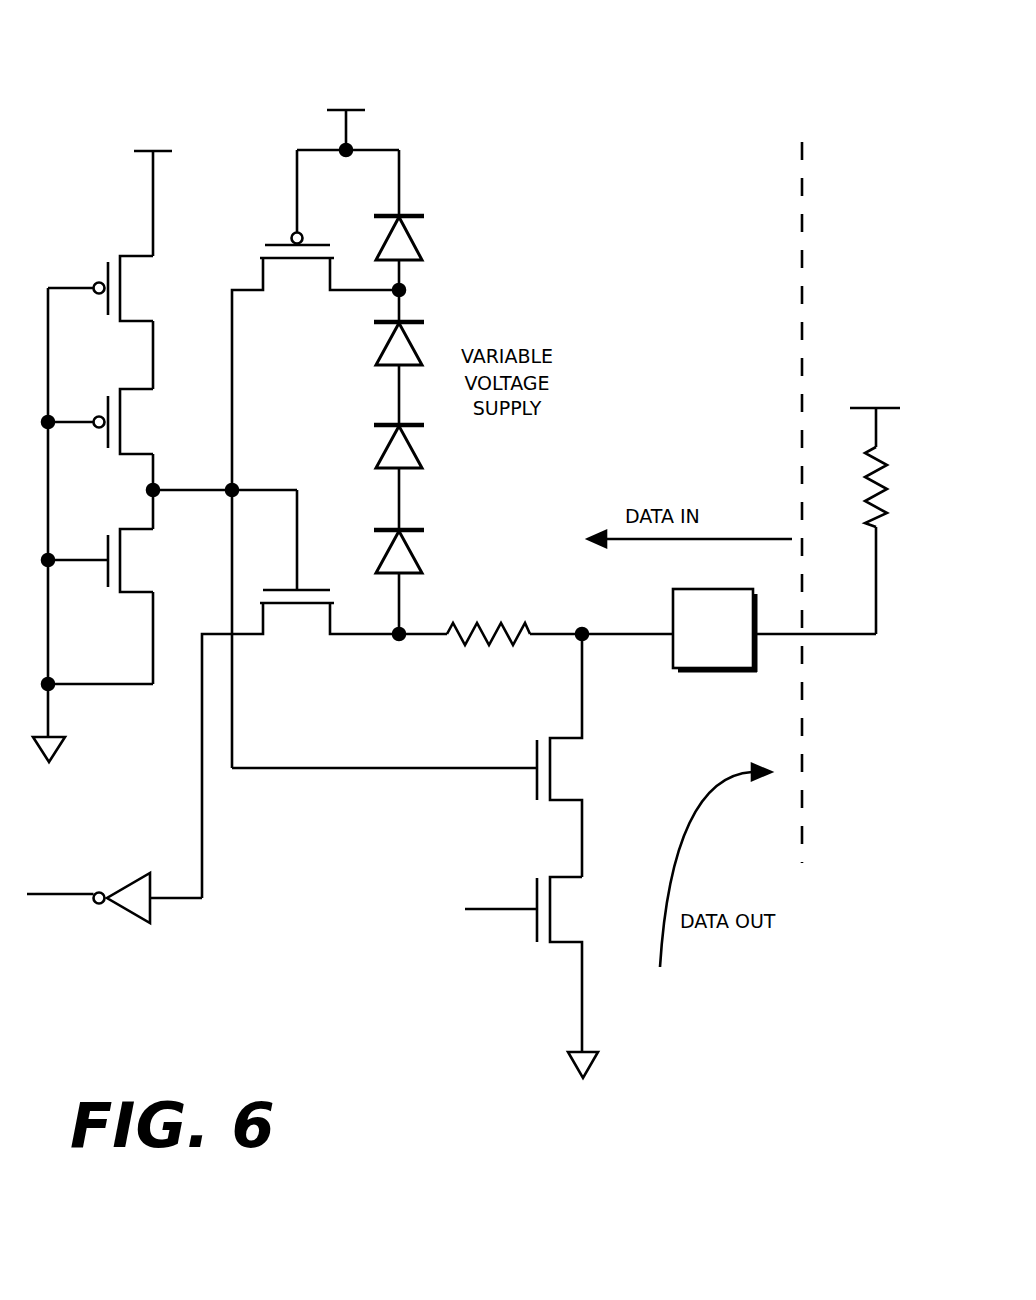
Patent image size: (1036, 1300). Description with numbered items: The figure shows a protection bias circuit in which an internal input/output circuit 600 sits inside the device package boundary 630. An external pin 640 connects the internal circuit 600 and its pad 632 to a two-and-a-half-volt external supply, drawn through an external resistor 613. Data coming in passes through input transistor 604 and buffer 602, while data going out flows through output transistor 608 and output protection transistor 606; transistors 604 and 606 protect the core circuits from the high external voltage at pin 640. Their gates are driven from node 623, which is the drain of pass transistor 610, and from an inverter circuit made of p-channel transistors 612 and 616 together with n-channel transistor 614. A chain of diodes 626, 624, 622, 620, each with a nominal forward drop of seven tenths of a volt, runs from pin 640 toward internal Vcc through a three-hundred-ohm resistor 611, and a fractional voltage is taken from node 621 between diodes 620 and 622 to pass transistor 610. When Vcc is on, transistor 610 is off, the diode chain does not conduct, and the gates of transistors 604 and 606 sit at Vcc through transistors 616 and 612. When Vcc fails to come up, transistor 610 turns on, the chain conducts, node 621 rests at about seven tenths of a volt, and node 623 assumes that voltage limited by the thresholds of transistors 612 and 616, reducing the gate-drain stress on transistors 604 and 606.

The internal input/output circuit 600 is at (107, 30).
The buffer 602 is at (114, 913).
The input transistor 604 is at (324, 744).
The output protection transistor 606 is at (424, 755).
The output transistor 608 is at (517, 977).
The pass transistor 610 is at (315, 424).
The resistor 611 is at (560, 649).
The p-channel pass transistor 612 is at (115, 387).
The external resistor 613 is at (868, 428).
The transistor 614 is at (115, 523).
The p-channel pass transistor 616 is at (118, 288).
The diode 620 is at (419, 236).
The node 621 is at (422, 290).
The diode 622 is at (419, 372).
The node 623 is at (222, 526).
The diode 624 is at (419, 477).
The diode 626 is at (422, 585).
The device package boundary 630 is at (803, 486).
The pad 632 is at (715, 630).
The external pin 640 is at (818, 608).